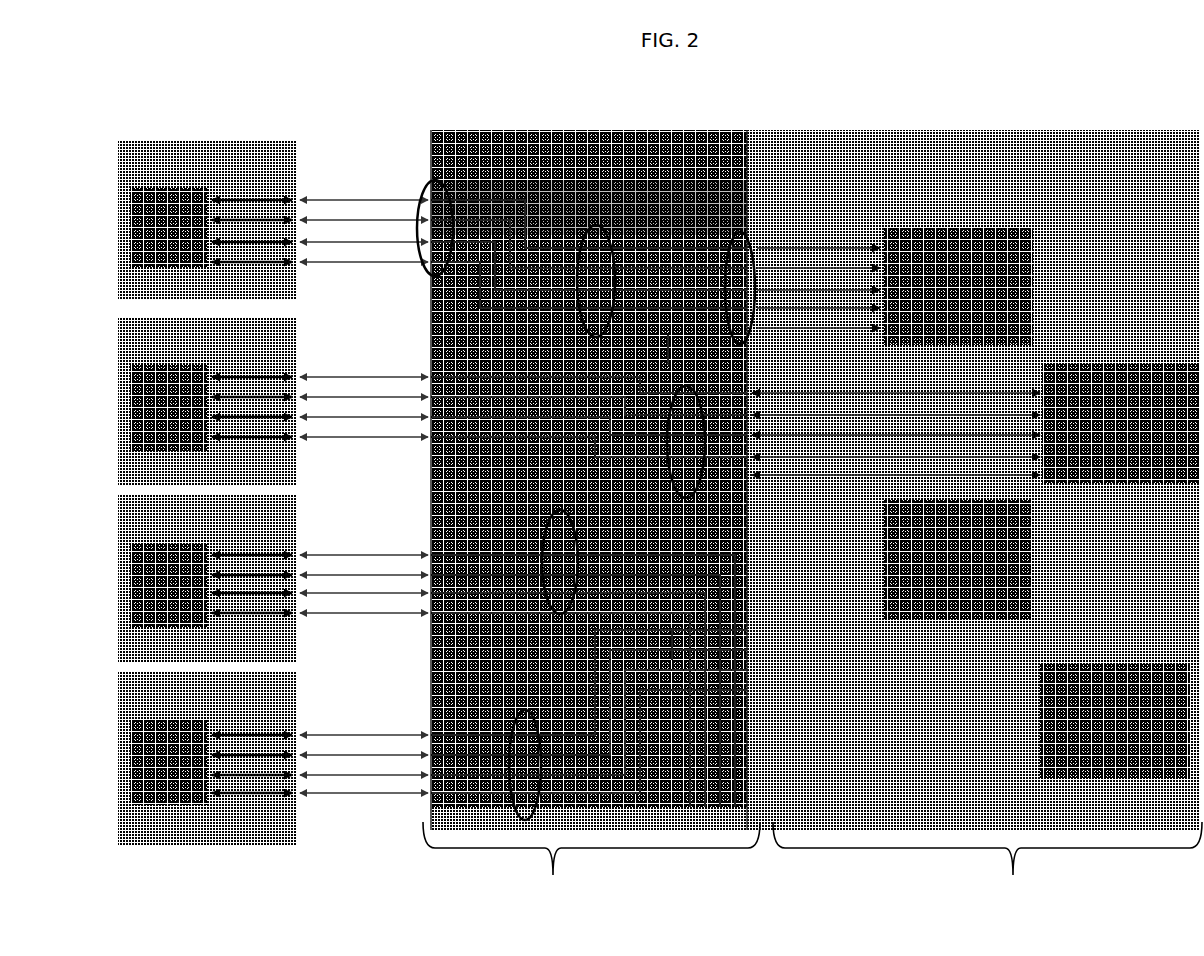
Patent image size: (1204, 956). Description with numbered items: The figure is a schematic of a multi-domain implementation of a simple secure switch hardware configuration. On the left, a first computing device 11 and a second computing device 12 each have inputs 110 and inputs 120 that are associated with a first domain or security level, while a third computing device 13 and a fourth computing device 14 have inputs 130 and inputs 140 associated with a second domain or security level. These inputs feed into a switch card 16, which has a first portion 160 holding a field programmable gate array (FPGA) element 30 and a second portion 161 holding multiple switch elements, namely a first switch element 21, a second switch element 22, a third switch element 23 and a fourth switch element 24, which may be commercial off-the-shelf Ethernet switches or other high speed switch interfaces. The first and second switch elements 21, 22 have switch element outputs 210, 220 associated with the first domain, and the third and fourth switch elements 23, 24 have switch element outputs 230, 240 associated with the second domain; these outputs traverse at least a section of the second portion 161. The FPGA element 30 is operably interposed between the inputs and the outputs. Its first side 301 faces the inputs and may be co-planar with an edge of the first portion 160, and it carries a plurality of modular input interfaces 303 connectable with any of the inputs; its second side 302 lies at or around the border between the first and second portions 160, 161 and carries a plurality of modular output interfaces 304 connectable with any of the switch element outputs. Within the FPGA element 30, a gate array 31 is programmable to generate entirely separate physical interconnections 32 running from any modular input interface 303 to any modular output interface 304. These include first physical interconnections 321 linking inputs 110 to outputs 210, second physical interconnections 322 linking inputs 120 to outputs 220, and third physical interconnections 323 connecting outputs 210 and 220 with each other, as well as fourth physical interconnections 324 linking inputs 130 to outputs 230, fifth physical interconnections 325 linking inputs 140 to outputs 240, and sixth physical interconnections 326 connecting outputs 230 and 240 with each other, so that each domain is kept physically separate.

The first computing device 11 is at (142, 161).
The second computing device 12 is at (142, 359).
The third computing device 13 is at (142, 656).
The fourth computing device 14 is at (142, 706).
The switch card 16 is at (469, 163).
The first switch element 21 is at (994, 259).
The second switch element 22 is at (1124, 411).
The third switch element 23 is at (994, 558).
The fourth switch element 24 is at (1124, 753).
The field programmable gate array (FPGA) element 30 is at (673, 180).
The gate array 31 is at (667, 211).
The physical interconnections 32 is at (558, 312).
The inputs 110 is at (392, 201).
The inputs 120 is at (400, 436).
The inputs 130 is at (337, 612).
The inputs 140 is at (378, 737).
The first portion 160 is at (591, 515).
The second portion 161 is at (974, 515).
The switch element outputs 210 is at (812, 327).
The switch element outputs 220 is at (850, 474).
The switch element outputs 230 is at (822, 535).
The switch element outputs 240 is at (883, 690).
The first side 301 is at (430, 148).
The second side 302 is at (742, 195).
The modular input interfaces 303 is at (422, 190).
The modular output interfaces 304 is at (737, 320).
The first physical interconnections 321 is at (600, 225).
The second physical interconnections 322 is at (700, 466).
The third physical interconnections 323 is at (668, 350).
The fourth physical interconnections 324 is at (573, 522).
The fifth physical interconnections 325 is at (530, 712).
The sixth physical interconnections 326 is at (672, 643).